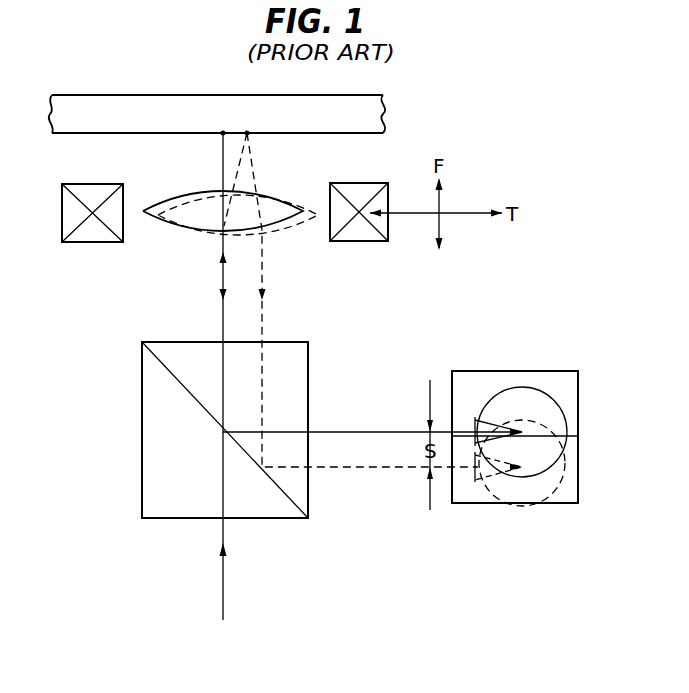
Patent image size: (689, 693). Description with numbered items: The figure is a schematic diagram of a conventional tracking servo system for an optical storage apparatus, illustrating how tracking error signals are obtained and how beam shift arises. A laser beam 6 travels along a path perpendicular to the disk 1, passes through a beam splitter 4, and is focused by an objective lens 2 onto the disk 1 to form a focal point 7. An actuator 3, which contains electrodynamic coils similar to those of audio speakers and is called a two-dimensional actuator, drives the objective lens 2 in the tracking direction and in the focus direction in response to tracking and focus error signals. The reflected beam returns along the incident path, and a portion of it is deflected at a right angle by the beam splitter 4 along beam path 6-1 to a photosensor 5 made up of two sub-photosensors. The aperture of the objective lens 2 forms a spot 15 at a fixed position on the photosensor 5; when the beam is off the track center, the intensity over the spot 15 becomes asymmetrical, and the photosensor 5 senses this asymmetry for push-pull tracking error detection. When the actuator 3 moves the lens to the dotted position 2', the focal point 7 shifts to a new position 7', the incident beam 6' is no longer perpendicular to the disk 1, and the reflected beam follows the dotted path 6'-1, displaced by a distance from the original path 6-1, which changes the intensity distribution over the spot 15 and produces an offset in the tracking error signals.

The disk 1 is at (390, 100).
The objective lens 2 is at (223, 233).
The objective lens (shifted position) 2' is at (238, 201).
The actuator 3 is at (62, 216).
The beam splitter 4 is at (144, 474).
The photosensor 5 is at (563, 371).
The laser beam 6 is at (209, 376).
The shifted laser beam 6' is at (351, 300).
The beam path 6-1 is at (393, 432).
The dotted line path 6'-1 is at (427, 477).
The focal point 7 is at (223, 120).
The new position of focal point 7' is at (249, 120).
The spot 15 is at (519, 390).